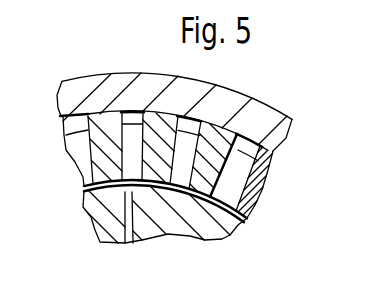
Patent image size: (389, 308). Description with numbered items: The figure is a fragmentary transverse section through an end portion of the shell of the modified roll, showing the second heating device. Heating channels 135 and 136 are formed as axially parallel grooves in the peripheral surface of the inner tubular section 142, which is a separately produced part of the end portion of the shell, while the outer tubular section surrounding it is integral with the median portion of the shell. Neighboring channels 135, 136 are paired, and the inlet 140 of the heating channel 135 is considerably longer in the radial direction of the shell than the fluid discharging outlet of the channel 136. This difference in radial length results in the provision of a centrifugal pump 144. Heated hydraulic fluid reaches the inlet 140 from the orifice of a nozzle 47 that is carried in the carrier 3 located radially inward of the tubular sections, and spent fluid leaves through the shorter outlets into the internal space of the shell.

The carrier 3 is at (113, 205).
The nozzle 47 is at (128, 248).
The heating channel 135 is at (133, 117).
The heating channel 136 is at (189, 128).
The inlet 140 is at (228, 187).
The inner tubular section 142 is at (100, 128).
The centrifugal pump 144 is at (258, 163).